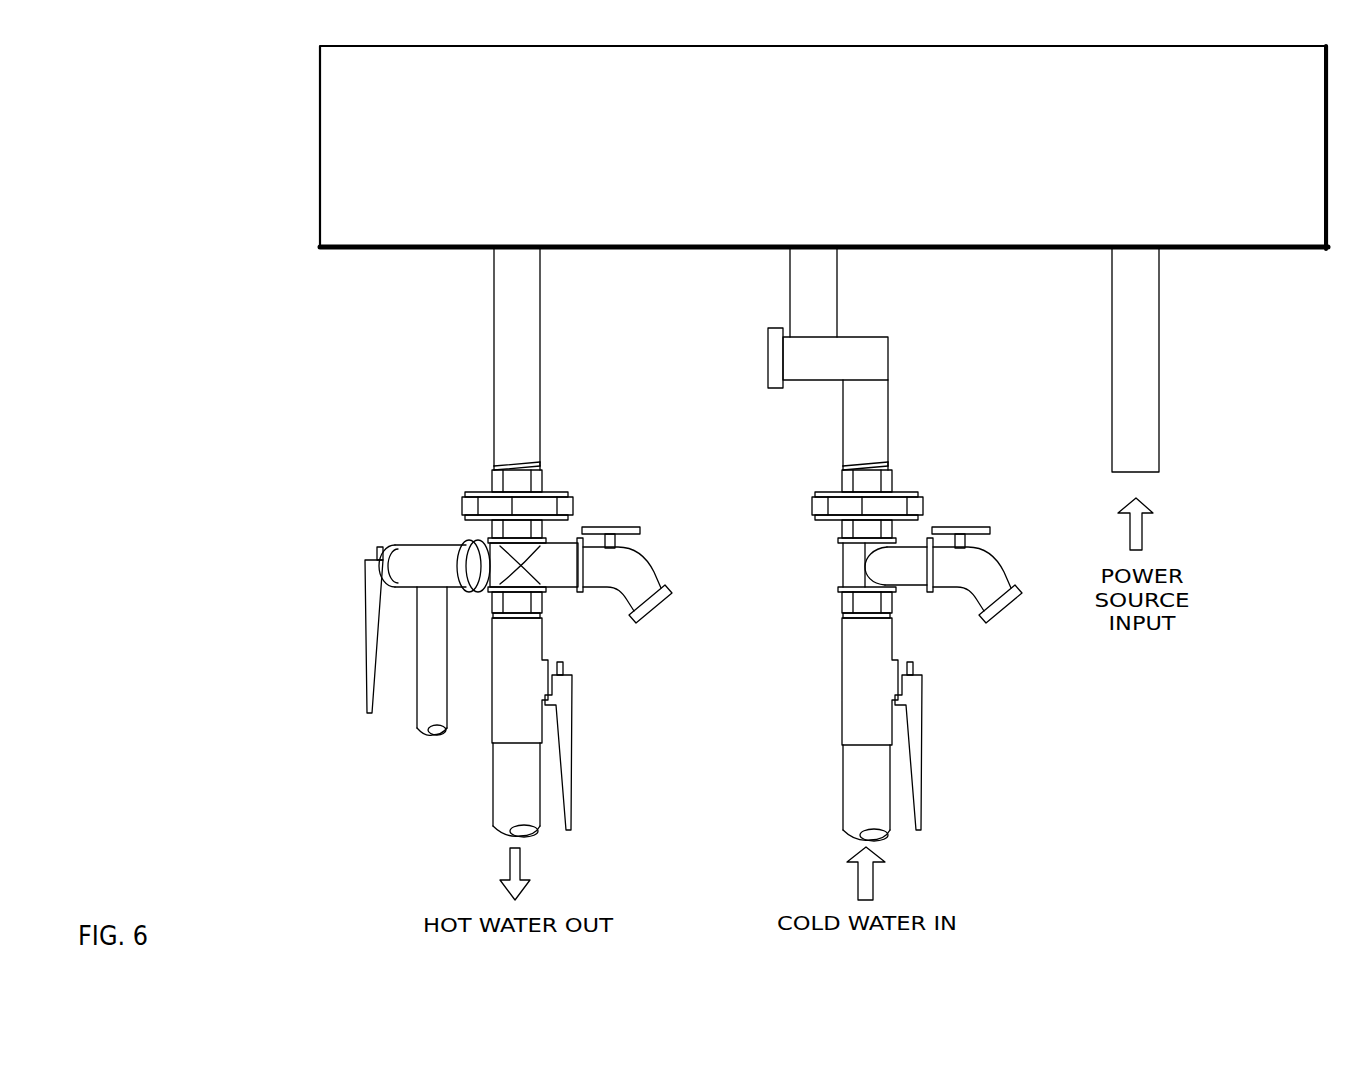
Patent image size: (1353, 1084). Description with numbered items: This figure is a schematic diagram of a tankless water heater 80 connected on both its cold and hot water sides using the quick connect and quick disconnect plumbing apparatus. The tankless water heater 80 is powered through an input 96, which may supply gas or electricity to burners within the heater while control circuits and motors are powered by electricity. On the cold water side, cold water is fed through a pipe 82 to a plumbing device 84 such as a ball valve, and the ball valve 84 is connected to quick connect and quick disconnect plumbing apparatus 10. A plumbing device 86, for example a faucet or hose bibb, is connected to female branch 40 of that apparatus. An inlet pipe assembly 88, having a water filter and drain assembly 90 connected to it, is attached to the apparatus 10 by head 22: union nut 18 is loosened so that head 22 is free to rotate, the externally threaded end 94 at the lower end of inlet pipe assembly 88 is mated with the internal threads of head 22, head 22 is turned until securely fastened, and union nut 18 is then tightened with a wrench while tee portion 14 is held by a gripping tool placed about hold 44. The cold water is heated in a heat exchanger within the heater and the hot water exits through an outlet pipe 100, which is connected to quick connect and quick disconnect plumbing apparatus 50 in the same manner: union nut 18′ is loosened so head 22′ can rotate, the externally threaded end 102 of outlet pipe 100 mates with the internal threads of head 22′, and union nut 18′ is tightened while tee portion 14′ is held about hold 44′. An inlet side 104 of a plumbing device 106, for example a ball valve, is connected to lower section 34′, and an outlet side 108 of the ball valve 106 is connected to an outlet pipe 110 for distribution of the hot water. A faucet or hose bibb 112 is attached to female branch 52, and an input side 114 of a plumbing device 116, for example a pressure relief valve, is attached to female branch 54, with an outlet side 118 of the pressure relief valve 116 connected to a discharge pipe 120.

The tankless water heater 80 is at (821, 186).
The input 96 is at (1160, 338).
The outlet pipe 100 is at (494, 334).
The externally threaded end 102 is at (494, 465).
The head 22′ is at (547, 480).
The union nut 18′ is at (574, 500).
The hold 44′ is at (548, 530).
The tee portion 14′ is at (475, 598).
The female branch 52 is at (579, 624).
The lower section 34′ is at (562, 600).
The faucet or hose bibb 112 is at (652, 570).
The inlet side 104 is at (528, 630).
The plumbing device 106 is at (528, 718).
The outlet side 108 is at (492, 735).
The outlet pipe 110 is at (493, 822).
The input side 114 is at (461, 548).
The female branch 54 is at (470, 556).
The plumbing device 116 is at (424, 562).
The outlet side 118 is at (422, 568).
The discharge pipe 120 is at (423, 708).
The quick connect and quick disconnect plumbing apparatus 50 is at (348, 500).
The inlet pipe assembly 88 is at (859, 357).
The water filter and drain assembly 90 is at (768, 350).
The quick connect and quick disconnect plumbing apparatus 10 is at (964, 442).
The externally threaded end 94 is at (843, 468).
The head 22 is at (893, 478).
The union nut 18 is at (921, 503).
The hold 44 is at (840, 528).
The tee portion 14 is at (830, 566).
The female branch 40 is at (918, 587).
The plumbing device 86 is at (1000, 570).
The plumbing device 84 is at (884, 638).
The pipe 82 is at (842, 777).